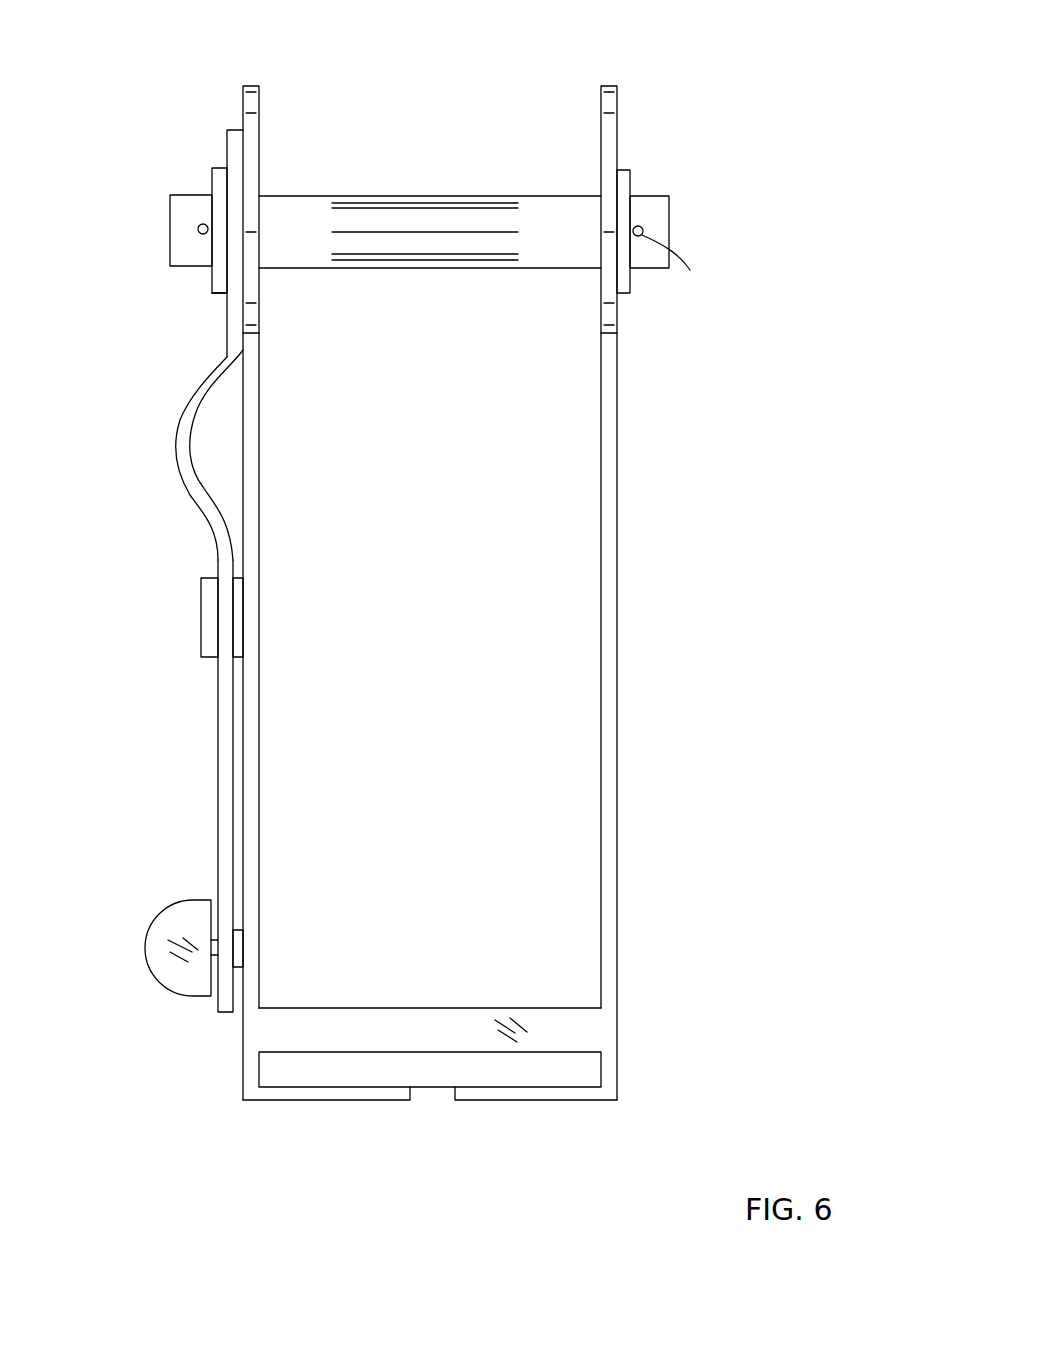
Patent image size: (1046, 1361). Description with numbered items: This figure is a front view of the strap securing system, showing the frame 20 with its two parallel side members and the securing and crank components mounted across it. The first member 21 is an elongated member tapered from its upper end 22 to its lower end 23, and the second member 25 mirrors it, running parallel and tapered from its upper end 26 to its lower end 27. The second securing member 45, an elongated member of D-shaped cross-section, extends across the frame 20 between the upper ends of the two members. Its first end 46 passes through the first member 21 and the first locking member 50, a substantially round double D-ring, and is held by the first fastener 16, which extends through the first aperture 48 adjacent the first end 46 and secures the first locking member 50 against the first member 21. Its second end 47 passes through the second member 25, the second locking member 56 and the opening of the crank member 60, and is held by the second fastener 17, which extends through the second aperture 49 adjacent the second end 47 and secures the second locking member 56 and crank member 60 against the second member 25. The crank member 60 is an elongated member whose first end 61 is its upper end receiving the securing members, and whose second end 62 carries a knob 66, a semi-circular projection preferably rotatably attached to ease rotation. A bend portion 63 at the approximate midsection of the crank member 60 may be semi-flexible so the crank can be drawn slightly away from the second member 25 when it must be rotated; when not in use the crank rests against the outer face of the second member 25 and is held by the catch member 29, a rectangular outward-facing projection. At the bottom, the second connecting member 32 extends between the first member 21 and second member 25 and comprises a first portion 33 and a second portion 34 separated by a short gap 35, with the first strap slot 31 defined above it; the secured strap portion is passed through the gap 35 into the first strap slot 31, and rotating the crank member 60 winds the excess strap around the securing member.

The first fastener 16 is at (640, 228).
The second fastener 17 is at (202, 225).
The frame 20 is at (424, 611).
The first member 21 is at (617, 602).
The upper end 22 is at (606, 84).
The lower end 23 is at (424, 1104).
The second member 25 is at (259, 690).
The upper end 26 is at (247, 85).
The lower end 27 is at (245, 1072).
The catch member 29 is at (200, 618).
The first strap slot 31 is at (493, 1067).
The second connecting member 32 is at (307, 1086).
The first portion 33 is at (472, 1095).
The second portion 34 is at (381, 1093).
The gap 35 is at (433, 1097).
The second securing member 45 is at (538, 255).
The first end 46 is at (168, 225).
The second end 47 is at (665, 232).
The first aperture 48 is at (198, 236).
The second aperture 49 is at (690, 270).
The first locking member 50 is at (630, 182).
The second locking member 56 is at (212, 284).
The crank member 60 is at (150, 563).
The first end 61 is at (227, 142).
The second end 62 is at (220, 1003).
The bend portion 63 is at (177, 449).
The knob 66 is at (146, 952).